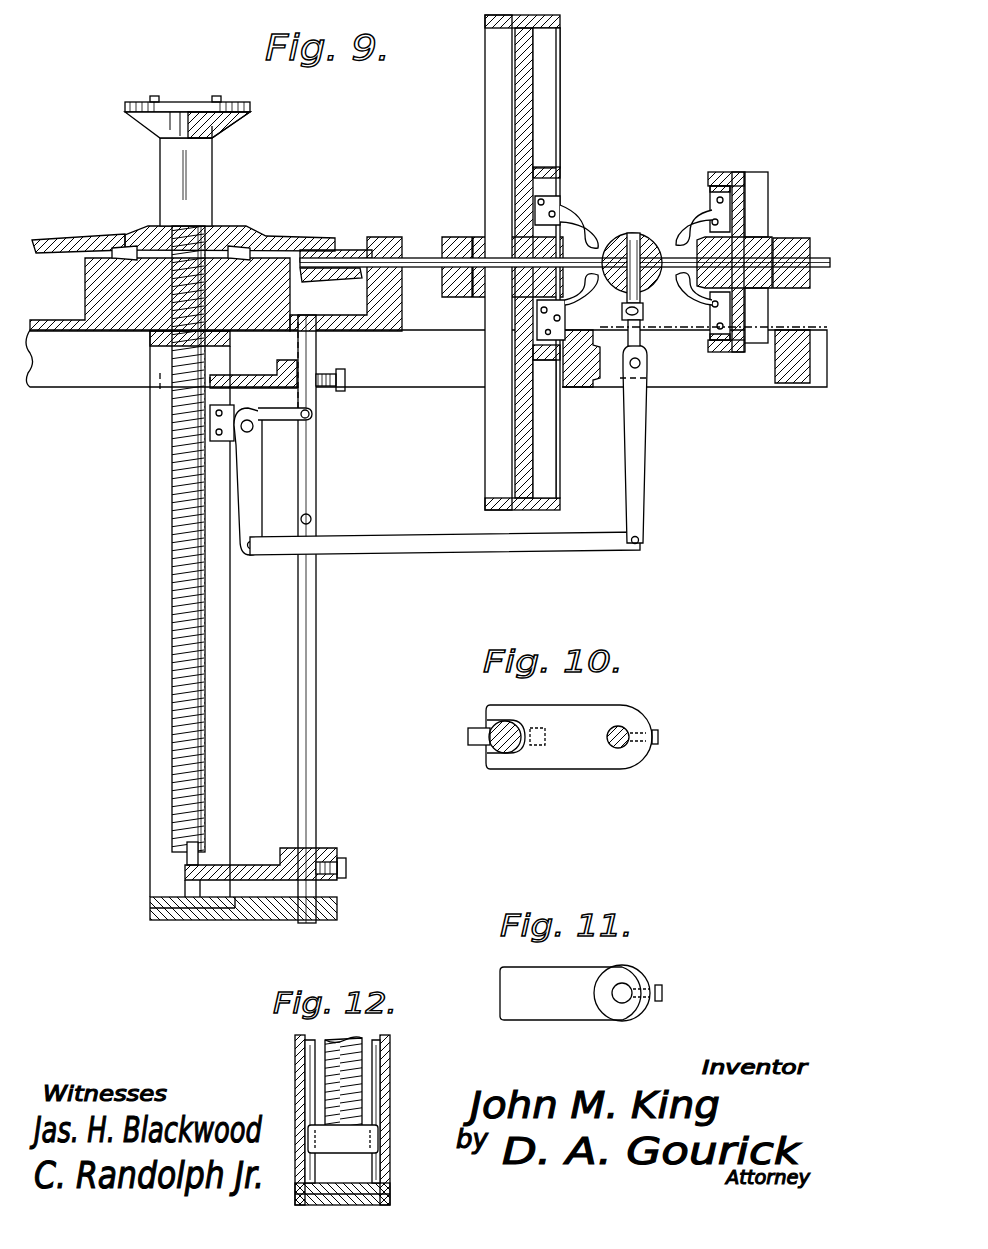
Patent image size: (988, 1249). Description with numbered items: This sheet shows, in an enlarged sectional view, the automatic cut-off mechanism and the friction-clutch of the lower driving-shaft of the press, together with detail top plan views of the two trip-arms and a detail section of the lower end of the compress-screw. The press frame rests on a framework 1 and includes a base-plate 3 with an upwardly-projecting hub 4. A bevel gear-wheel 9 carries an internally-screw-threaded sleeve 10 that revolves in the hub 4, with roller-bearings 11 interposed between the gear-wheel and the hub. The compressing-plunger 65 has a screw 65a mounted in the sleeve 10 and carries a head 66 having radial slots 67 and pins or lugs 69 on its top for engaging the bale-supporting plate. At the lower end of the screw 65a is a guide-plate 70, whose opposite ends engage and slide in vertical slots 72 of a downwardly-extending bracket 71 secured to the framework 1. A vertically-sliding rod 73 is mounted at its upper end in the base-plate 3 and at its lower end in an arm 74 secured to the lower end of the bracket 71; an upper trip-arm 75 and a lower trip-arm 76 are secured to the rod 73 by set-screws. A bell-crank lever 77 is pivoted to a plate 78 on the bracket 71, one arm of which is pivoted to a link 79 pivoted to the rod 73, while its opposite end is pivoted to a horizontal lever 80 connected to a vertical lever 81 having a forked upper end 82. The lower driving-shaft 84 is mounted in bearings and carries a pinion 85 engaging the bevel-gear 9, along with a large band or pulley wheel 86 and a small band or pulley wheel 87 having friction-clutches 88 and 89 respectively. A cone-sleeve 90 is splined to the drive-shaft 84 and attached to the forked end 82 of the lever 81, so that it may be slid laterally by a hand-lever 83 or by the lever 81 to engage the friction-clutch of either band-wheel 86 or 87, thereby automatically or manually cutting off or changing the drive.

In FIG. 9, the framework 1 is at (472, 376).
In FIG. 9, the base-plate 3 is at (403, 326).
In FIG. 9, the hub 4 is at (85, 292).
In FIG. 9, the bevel gear-wheel 9 is at (50, 248).
In FIG. 9, the internally-screw-threaded sleeve 10 is at (152, 338).
In FIG. 9, the roller-bearings 11 is at (115, 254).
In FIG. 9, the compressing-plunger 65 is at (160, 202).
In FIG. 12, the compressing-plunger 65 is at (362, 1086).
In FIG. 9, the screw 65a is at (172, 610).
In FIG. 9, the head 66 is at (214, 138).
In FIG. 9, the radial slots 67 is at (146, 122).
In FIG. 9, the pins or lugs 69 is at (153, 97).
In FIG. 9, the guide-plate 70 is at (187, 855).
In FIG. 10, the guide-plate 70 is at (468, 737).
In FIG. 12, the guide-plate 70 is at (378, 1140).
In FIG. 9, the bracket 71 is at (150, 732).
In FIG. 12, the bracket 71 is at (295, 1108).
In FIG. 9, the vertical slots 72 is at (185, 888).
In FIG. 12, the vertical slots 72 is at (305, 1072).
In FIG. 9, the vertically-sliding rod 73 is at (316, 688).
In FIG. 9, the arm 74 is at (290, 921).
In FIG. 12, the arm 74 is at (390, 1192).
In FIG. 9, the upper trip-arm 75 is at (346, 379).
In FIG. 10, the upper trip-arm 75 is at (572, 702).
In FIG. 9, the lower trip-arm 76 is at (340, 862).
In FIG. 11, the lower trip-arm 76 is at (582, 964).
In FIG. 9, the bell-crank lever 77 is at (252, 470).
In FIG. 9, the plate 78 is at (210, 427).
In FIG. 9, the link 79 is at (306, 462).
In FIG. 9, the horizontal lever 80 is at (428, 541).
In FIG. 9, the vertical lever 81 is at (640, 447).
In FIG. 9, the forked upper end 82 is at (636, 233).
In FIG. 9, the hand-lever 83 is at (643, 318).
In FIG. 9, the lower driving-shaft 84 is at (412, 258).
In FIG. 9, the pinion 85 is at (345, 246).
In FIG. 9, the large band or pulley wheel 86 is at (542, 150).
In FIG. 9, the small band or pulley wheel 87 is at (757, 182).
In FIG. 9, the friction-clutch 88 is at (563, 215).
In FIG. 9, the friction-clutch 89 is at (704, 222).
In FIG. 9, the cone-sleeve 90 is at (612, 242).